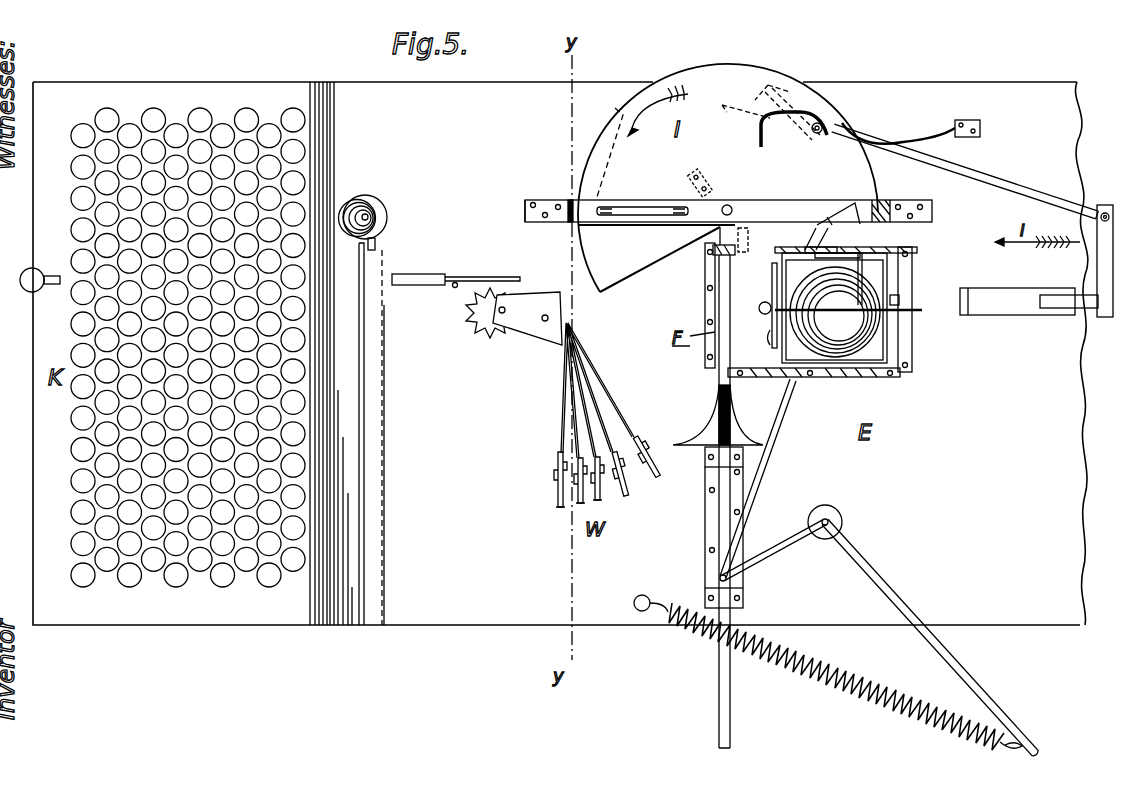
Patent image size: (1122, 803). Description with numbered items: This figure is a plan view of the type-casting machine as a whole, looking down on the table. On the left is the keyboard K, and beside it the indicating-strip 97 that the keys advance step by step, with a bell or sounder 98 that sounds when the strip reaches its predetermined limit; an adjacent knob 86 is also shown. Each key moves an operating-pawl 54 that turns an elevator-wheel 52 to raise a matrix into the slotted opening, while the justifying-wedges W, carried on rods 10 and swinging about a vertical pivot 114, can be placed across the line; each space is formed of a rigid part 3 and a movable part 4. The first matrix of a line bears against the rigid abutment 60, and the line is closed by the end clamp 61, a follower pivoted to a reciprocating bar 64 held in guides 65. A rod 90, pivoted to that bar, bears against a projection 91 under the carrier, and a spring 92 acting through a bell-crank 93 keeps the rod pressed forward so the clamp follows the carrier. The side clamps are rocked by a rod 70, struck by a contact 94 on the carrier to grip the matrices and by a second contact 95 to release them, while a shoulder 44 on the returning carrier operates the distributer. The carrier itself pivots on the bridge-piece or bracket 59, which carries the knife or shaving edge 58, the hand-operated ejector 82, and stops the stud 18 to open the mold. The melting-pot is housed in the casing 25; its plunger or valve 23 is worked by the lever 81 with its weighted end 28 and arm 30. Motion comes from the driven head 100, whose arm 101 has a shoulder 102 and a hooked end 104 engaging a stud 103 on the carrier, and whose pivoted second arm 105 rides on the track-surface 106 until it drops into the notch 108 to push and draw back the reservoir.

The knob 86 is at (22, 292).
The bell or sounder 98 is at (387, 217).
The indicating-strip 97 is at (365, 495).
The operating-pawl 54 is at (491, 277).
The elevator-wheel 52 is at (482, 340).
The vertical pivot 114 is at (545, 321).
The bridge-piece or bracket 59 is at (728, 212).
The stud 18 is at (566, 224).
The ejector 82 is at (652, 212).
The knife or shaving edge 58 is at (728, 178).
The contact or shoulder 44 is at (728, 106).
The hooked end 104 is at (760, 137).
The stud 103 is at (816, 134).
The shoulder 102 is at (836, 130).
The arm 101 is at (1000, 178).
The driven head 100 is at (1099, 264).
The track-surface 106 is at (966, 298).
The second arm or projection 105 is at (1056, 310).
The projection 91 is at (829, 212).
The rod 70 is at (724, 241).
The second contact 95 is at (749, 240).
The casing 25 is at (905, 335).
The rigid abutment 60 is at (720, 272).
The arm 30 is at (860, 290).
The lever 81 is at (848, 322).
The weighted end 28 is at (762, 304).
The plunger or valve 23 is at (773, 330).
The notch 108 is at (897, 300).
The arm or rod 10 is at (600, 405).
The rigid part of space 3 is at (627, 470).
The movable part of space 4 is at (603, 518).
The end clamp 61 is at (719, 410).
The guides 65 is at (745, 612).
The reciprocating bar 64 is at (705, 520).
The rod 90 is at (748, 470).
The bell-crank 93 is at (880, 630).
The spring 92 is at (885, 684).
The contact 94 is at (700, 165).